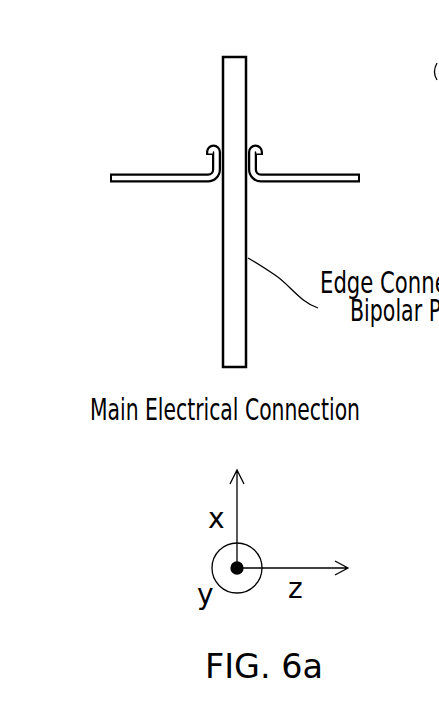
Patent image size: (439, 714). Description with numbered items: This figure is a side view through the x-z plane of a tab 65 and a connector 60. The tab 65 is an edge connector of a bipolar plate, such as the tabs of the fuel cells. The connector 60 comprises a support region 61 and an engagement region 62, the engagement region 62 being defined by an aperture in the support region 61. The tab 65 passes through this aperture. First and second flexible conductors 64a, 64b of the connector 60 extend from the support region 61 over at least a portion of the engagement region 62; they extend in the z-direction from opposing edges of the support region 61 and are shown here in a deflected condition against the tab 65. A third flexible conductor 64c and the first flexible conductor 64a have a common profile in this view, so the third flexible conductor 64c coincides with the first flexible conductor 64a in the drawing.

The connector 60 is at (232, 143).
The support region 61 is at (192, 102).
The engagement region 62 is at (212, 195).
The first flexible conductor 64a is at (121, 102).
The second flexible conductor 64b is at (255, 145).
The third flexible conductor 64c is at (215, 148).
The tab 65 is at (222, 73).